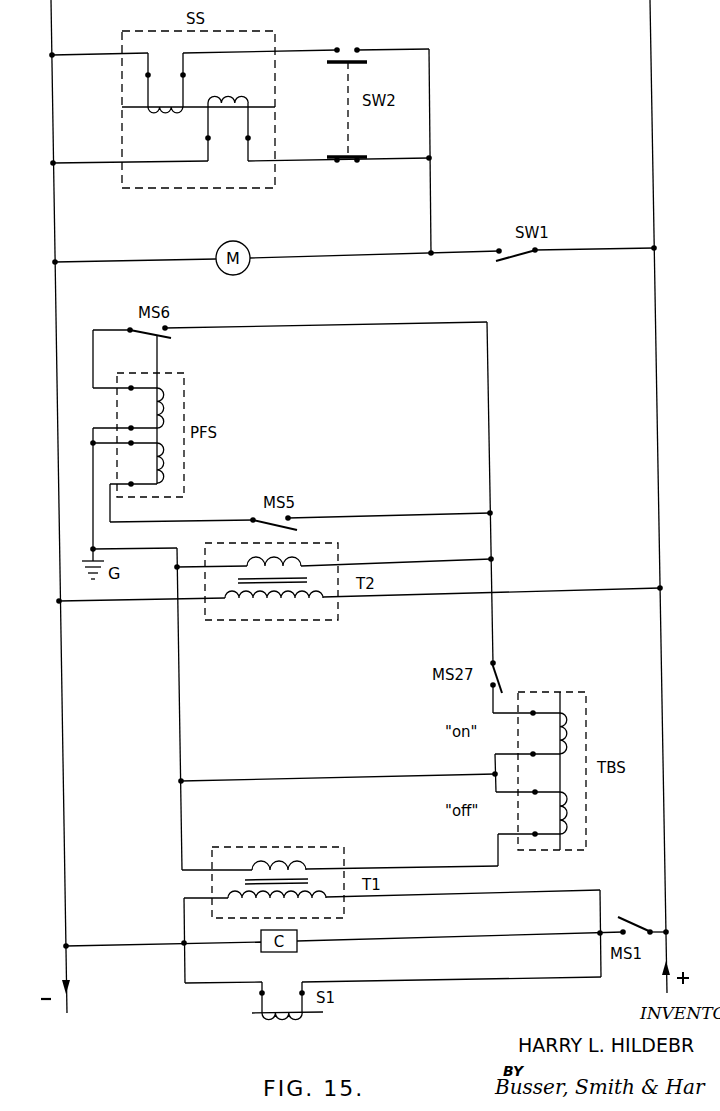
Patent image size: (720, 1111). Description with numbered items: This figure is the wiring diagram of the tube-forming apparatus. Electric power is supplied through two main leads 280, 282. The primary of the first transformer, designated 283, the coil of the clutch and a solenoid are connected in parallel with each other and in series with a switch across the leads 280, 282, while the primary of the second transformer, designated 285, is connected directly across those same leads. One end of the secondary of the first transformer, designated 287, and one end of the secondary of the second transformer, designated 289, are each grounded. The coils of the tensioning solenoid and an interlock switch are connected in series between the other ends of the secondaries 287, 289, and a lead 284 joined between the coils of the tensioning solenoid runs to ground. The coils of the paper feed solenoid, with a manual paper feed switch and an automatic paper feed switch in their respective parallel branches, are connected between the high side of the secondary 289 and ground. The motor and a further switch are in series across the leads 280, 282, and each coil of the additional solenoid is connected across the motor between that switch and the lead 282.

The main lead 280 is at (666, 853).
The main lead 282 is at (63, 902).
The primary of transformer T1 283 is at (322, 900).
The lead 284 is at (338, 767).
The primary of transformer T2 285 is at (321, 600).
The secondary of transformer T1 287 is at (263, 864).
The secondary of transformer T2 289 is at (263, 566).